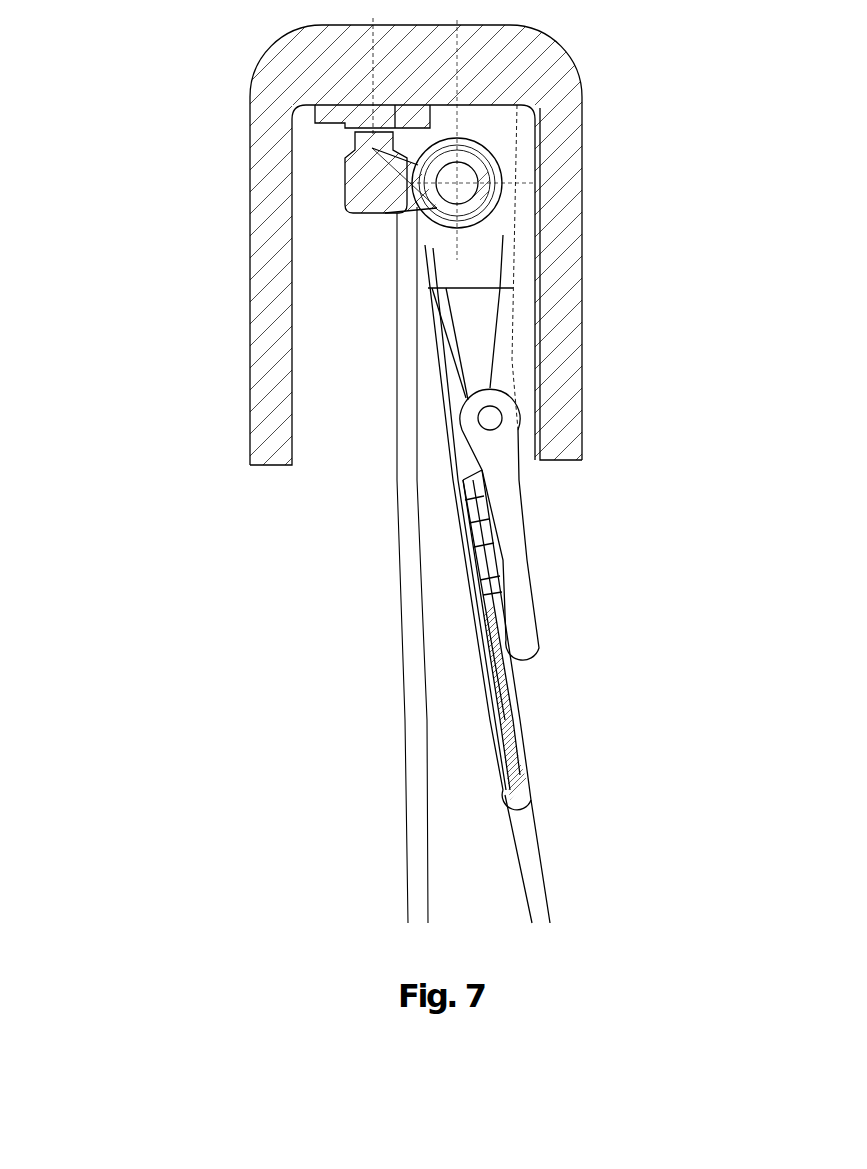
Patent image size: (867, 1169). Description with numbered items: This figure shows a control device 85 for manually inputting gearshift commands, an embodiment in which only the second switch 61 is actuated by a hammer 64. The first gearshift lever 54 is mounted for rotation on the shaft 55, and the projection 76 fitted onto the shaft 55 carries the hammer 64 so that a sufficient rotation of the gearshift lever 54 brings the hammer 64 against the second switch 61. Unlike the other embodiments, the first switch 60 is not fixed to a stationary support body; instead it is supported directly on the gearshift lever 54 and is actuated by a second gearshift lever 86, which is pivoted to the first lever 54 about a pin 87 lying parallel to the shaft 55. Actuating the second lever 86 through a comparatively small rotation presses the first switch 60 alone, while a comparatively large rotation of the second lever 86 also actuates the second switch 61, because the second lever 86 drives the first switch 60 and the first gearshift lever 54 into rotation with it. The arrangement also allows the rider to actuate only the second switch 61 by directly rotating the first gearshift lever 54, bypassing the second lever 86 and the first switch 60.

The gearshift lever 54 is at (512, 722).
The shaft 55 is at (460, 185).
The first switch 60 is at (487, 532).
The second switch 61 is at (358, 120).
The hammer 64 is at (358, 192).
The projection 76 is at (398, 192).
The control device 85 is at (227, 545).
The second gearshift lever 86 is at (520, 602).
The pin 87 is at (490, 415).